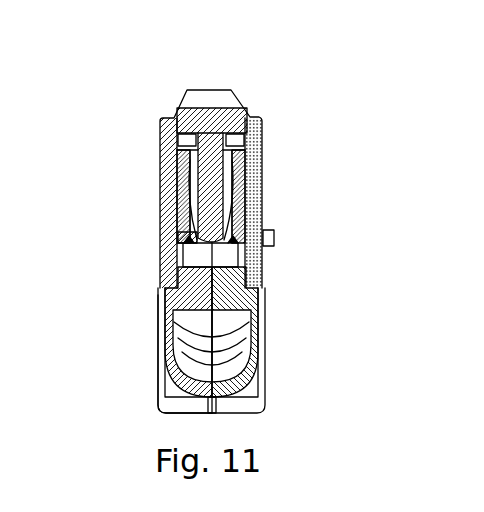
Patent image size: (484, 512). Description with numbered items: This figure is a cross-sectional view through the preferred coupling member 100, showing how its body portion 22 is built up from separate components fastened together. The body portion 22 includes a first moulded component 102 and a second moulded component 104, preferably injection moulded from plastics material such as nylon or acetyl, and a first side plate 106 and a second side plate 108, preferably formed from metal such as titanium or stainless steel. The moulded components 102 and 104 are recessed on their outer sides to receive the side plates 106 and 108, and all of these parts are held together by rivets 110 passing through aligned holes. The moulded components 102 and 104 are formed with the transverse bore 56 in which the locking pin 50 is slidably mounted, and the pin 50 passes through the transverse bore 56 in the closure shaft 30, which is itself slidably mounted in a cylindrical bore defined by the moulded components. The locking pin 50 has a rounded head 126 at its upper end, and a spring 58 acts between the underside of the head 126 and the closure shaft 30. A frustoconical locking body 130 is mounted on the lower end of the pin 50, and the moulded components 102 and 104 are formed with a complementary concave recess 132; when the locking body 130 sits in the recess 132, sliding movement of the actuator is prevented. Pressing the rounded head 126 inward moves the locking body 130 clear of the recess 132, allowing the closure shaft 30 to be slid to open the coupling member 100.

The coupling member 100 is at (152, 68).
The body portion 22 is at (268, 182).
The rounded head 126 is at (223, 108).
The locking pin 50 is at (207, 221).
The spring 58 is at (188, 142).
The second side plate 108 is at (158, 248).
The transverse bore 56 is at (258, 197).
The closure shaft 30 is at (177, 197).
The concave recess 132 is at (173, 245).
The frustoconical locking body 130 is at (250, 245).
The rivet 110 is at (278, 238).
The first moulded component 102 is at (268, 305).
The first side plate 106 is at (268, 282).
The second moulded component 104 is at (157, 315).